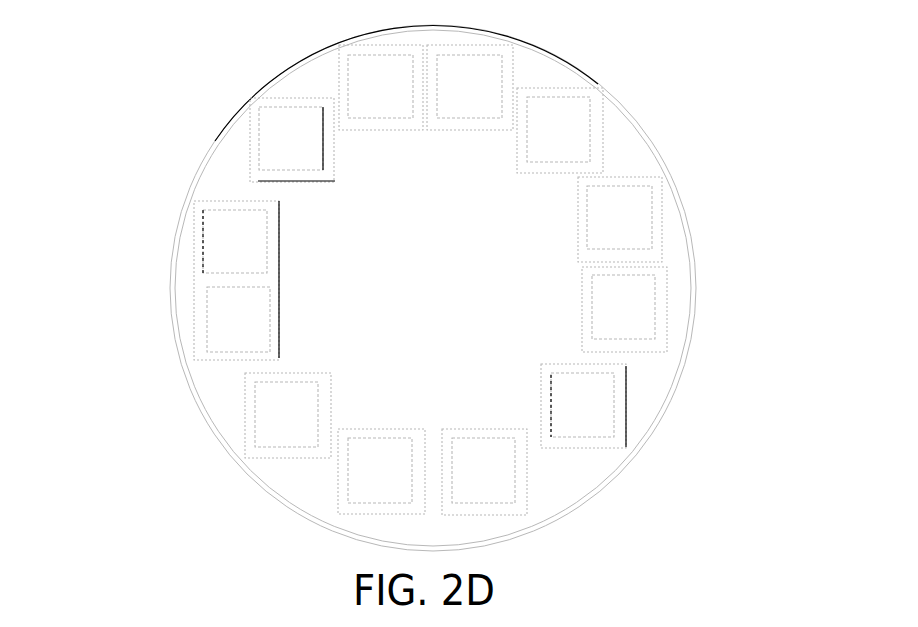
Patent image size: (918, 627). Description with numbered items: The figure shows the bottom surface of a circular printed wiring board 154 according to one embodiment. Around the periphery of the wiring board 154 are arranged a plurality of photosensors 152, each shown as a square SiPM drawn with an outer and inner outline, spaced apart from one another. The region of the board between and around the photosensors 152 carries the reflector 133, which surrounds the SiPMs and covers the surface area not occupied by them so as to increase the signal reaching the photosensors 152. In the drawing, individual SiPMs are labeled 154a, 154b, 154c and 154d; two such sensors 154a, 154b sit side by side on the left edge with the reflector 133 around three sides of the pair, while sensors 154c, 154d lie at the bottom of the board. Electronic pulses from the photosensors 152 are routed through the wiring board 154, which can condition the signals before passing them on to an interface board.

The printed wiring board 154 is at (450, 292).
The sensor 154a is at (237, 242).
The sensor 154b is at (237, 335).
The sensor 154c is at (377, 476).
The sensor 154d is at (488, 486).
The reflector 133 is at (493, 268).
The photosensor 152 is at (573, 412).